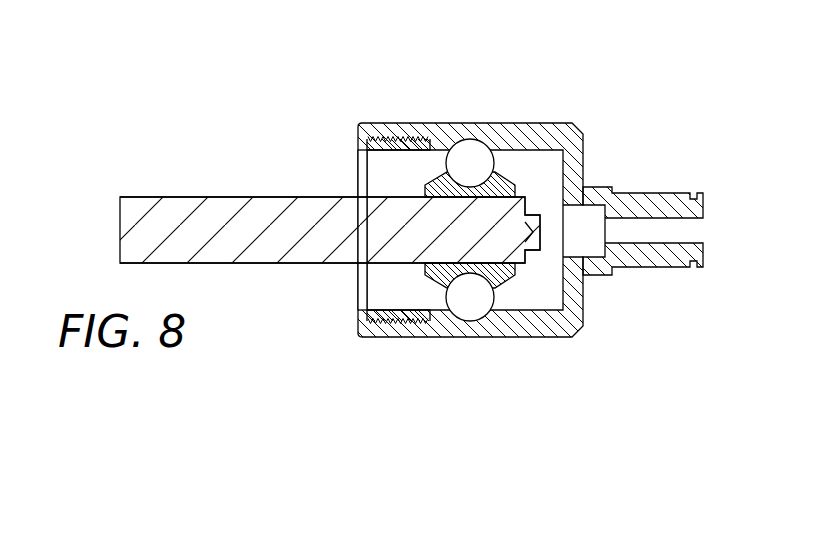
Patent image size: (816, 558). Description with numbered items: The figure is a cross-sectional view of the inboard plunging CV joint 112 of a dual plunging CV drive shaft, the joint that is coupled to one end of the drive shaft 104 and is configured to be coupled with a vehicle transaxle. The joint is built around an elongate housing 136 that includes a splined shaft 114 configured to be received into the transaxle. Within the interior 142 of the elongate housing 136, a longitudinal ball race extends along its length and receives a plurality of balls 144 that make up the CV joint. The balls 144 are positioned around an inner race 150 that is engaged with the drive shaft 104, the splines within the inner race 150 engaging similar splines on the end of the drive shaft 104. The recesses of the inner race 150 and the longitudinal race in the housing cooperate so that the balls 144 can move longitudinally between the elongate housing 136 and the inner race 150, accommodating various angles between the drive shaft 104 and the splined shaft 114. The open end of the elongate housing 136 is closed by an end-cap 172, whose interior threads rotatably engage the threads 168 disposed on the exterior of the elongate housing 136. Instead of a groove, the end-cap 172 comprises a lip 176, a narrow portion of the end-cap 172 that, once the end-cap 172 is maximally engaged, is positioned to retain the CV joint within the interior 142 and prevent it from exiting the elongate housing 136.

The drive shaft 104 is at (270, 263).
The inboard plunging CV joint 112 is at (547, 382).
The splined shaft 114 is at (646, 267).
The elongate housing 136 is at (452, 338).
The interior 142 is at (382, 183).
The balls 144 is at (472, 162).
The inner race 150 is at (427, 273).
The threads 168 is at (377, 135).
The end-cap 172 is at (397, 128).
The lip 176 is at (363, 163).